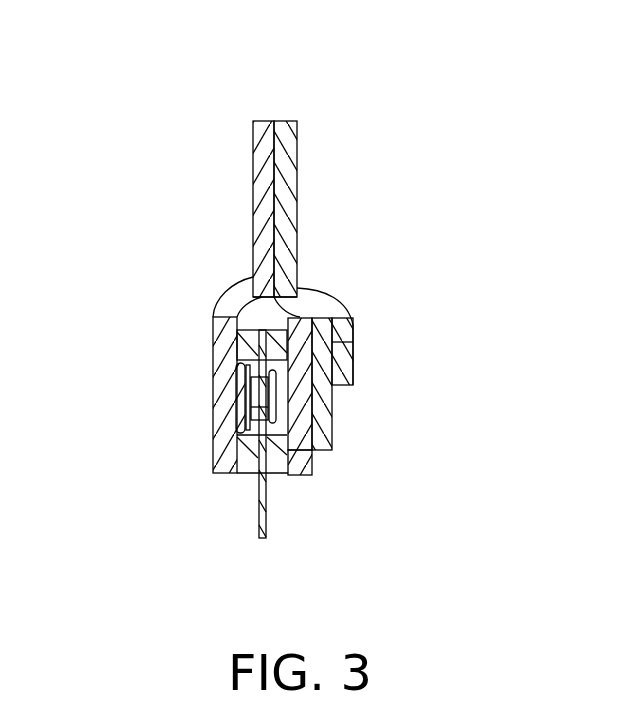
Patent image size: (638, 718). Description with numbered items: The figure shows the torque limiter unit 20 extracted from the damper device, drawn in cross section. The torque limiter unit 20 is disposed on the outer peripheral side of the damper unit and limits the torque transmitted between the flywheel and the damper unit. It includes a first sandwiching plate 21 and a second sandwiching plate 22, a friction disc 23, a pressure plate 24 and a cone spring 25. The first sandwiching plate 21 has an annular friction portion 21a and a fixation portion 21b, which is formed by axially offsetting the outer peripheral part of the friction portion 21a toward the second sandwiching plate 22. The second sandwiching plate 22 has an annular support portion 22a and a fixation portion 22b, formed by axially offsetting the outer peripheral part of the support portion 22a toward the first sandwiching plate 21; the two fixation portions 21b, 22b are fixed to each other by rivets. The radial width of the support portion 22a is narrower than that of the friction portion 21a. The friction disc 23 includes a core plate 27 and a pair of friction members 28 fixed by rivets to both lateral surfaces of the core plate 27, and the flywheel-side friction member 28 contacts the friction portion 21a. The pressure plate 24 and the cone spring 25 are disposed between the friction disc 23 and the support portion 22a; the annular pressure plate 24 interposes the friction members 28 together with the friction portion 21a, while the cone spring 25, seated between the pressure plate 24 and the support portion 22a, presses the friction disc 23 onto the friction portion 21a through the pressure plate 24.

The torque limiter unit 20 is at (422, 116).
The first sandwiching plate 21 is at (213, 350).
The friction portion 21a is at (242, 398).
The fixation portion 21b is at (270, 197).
The second sandwiching plate 22 is at (352, 316).
The support portion 22a is at (338, 358).
The fixation portion 22b is at (285, 178).
The friction disc 23 is at (247, 487).
The pressure plate 24 is at (300, 467).
The cone spring 25 is at (323, 410).
The core plate 27 is at (268, 517).
The friction members 28 is at (270, 465).